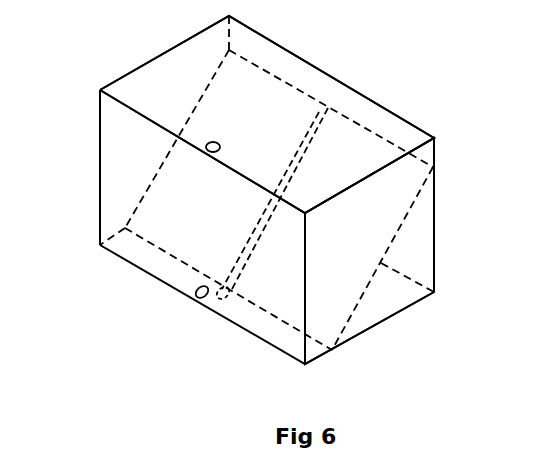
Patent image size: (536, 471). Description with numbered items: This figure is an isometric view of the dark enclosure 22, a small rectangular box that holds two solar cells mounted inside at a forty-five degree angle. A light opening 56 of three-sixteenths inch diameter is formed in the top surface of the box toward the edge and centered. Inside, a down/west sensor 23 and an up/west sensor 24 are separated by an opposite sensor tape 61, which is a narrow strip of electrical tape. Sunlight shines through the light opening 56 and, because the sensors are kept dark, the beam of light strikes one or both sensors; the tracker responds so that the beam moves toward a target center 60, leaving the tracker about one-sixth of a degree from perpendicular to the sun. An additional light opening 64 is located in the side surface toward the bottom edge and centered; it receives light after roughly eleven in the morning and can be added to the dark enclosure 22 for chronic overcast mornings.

The dark enclosure 22 is at (100, 176).
The down/west sensor 23 is at (228, 92).
The up/west sensor 24 is at (352, 250).
The light opening 56 is at (218, 141).
The target center 60 is at (220, 300).
The opposite sensor tape 61 is at (308, 157).
The additional light opening 64 is at (195, 295).